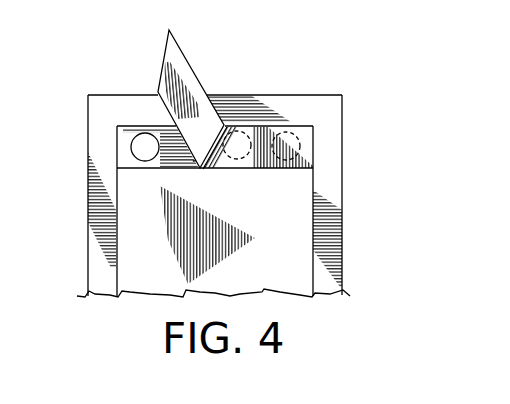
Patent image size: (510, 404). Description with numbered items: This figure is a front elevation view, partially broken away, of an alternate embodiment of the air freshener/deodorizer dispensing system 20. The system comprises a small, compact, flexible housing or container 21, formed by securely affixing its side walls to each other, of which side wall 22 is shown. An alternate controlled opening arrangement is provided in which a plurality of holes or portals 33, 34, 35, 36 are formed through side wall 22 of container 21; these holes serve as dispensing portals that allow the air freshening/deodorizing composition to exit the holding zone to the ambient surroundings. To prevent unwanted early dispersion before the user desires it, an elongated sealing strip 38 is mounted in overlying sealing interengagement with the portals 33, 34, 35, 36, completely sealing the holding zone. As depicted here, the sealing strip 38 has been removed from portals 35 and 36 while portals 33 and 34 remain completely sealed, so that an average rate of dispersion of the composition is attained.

The air freshener/deodorizer dispensing system 20 is at (80, 188).
The housing or container 21 is at (348, 158).
The side wall 22 is at (325, 220).
The hole or portal 33 is at (155, 157).
The hole or portal 34 is at (205, 157).
The hole or portal 35 is at (250, 131).
The hole or portal 36 is at (295, 131).
The elongated sealing strip 38 is at (174, 53).